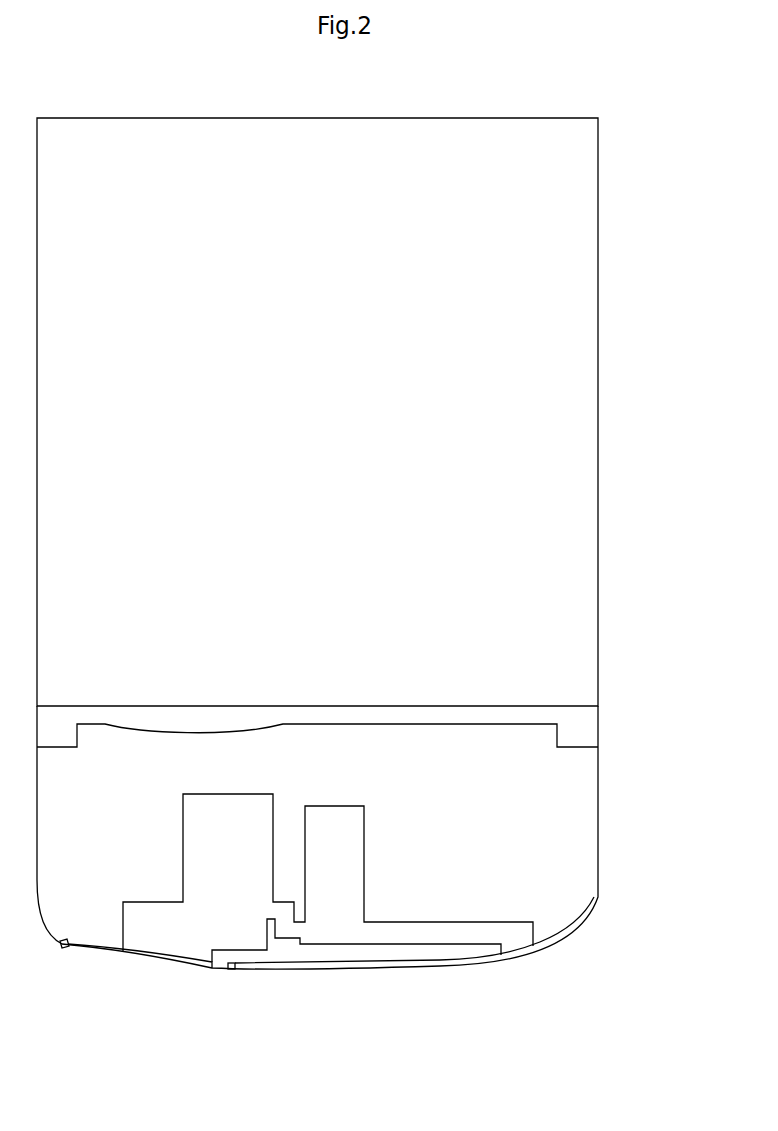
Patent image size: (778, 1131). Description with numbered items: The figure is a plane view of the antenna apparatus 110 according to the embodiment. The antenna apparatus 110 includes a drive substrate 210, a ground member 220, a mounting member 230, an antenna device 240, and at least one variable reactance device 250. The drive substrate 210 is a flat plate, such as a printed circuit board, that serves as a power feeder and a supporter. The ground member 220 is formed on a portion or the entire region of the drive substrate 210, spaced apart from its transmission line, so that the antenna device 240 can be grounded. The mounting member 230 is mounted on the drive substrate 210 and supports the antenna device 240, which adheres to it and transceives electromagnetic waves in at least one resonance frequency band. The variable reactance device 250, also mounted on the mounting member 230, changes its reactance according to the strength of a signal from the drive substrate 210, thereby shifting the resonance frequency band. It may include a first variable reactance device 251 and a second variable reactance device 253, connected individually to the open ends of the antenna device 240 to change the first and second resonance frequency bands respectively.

The antenna apparatus 110 is at (597, 76).
The ground member 220 is at (586, 483).
The drive substrate 210 is at (586, 730).
The mounting member 230 is at (586, 826).
The antenna device 240 is at (389, 932).
The variable reactance device 250 is at (327, 993).
The first variable reactance device 251 is at (63, 950).
The second variable reactance device 253 is at (232, 969).